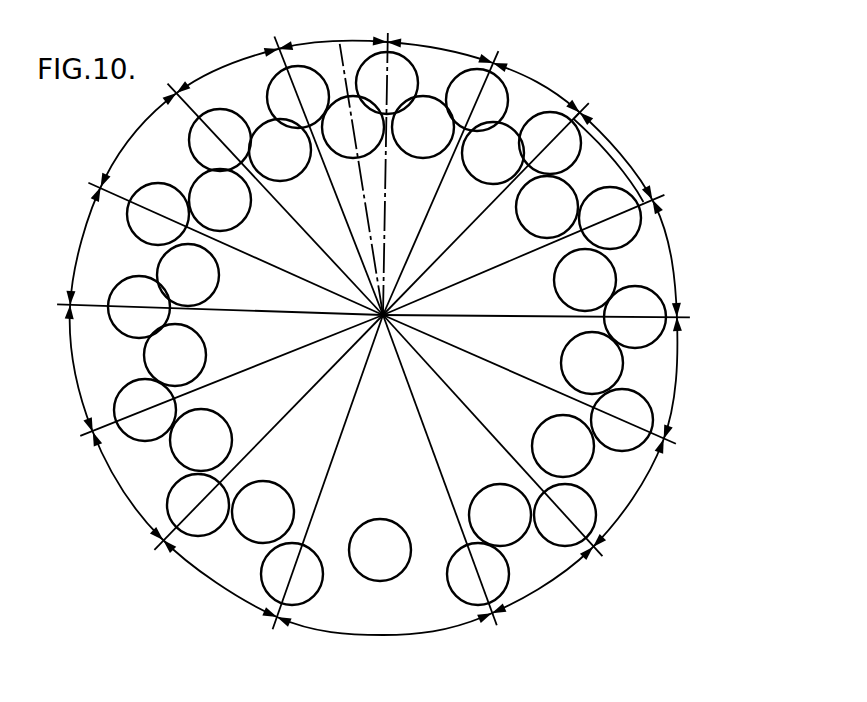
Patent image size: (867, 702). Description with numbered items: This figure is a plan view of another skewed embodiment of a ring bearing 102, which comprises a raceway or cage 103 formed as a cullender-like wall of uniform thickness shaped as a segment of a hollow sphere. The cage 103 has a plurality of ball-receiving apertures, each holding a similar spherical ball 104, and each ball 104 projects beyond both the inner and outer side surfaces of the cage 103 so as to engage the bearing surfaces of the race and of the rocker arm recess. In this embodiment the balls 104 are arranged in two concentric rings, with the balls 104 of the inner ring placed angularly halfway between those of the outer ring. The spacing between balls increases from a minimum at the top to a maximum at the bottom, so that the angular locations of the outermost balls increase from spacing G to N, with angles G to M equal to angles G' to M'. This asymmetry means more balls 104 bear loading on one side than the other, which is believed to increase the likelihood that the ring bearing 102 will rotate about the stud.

The ring bearing 102 is at (590, 176).
The cage 103 is at (517, 117).
The ball 104 is at (603, 127).